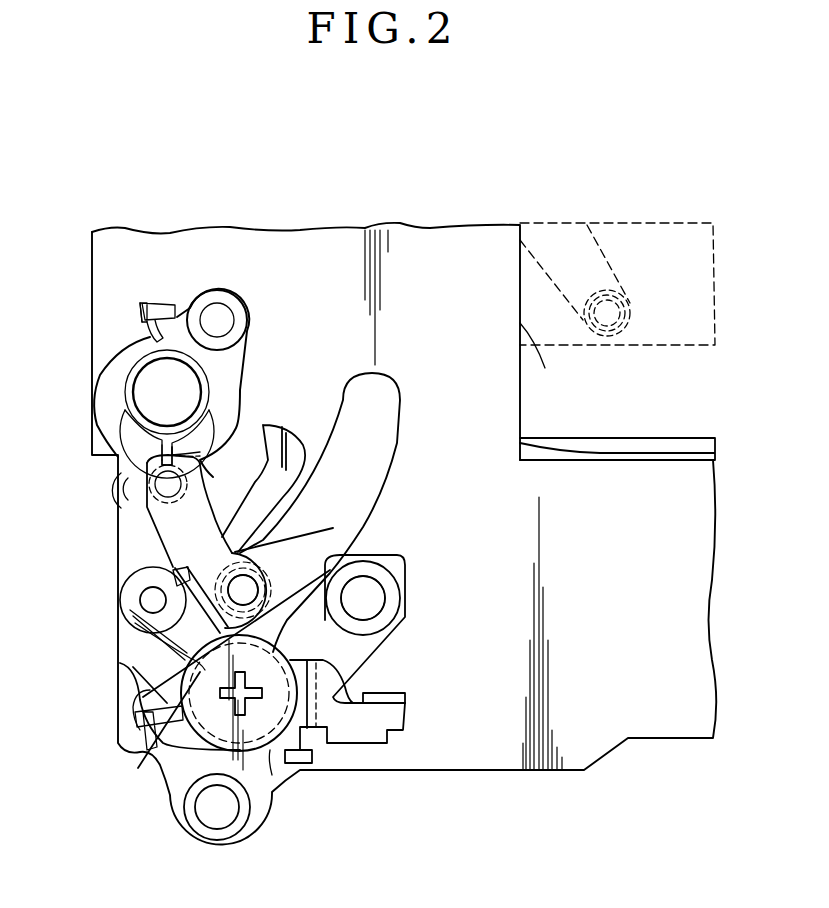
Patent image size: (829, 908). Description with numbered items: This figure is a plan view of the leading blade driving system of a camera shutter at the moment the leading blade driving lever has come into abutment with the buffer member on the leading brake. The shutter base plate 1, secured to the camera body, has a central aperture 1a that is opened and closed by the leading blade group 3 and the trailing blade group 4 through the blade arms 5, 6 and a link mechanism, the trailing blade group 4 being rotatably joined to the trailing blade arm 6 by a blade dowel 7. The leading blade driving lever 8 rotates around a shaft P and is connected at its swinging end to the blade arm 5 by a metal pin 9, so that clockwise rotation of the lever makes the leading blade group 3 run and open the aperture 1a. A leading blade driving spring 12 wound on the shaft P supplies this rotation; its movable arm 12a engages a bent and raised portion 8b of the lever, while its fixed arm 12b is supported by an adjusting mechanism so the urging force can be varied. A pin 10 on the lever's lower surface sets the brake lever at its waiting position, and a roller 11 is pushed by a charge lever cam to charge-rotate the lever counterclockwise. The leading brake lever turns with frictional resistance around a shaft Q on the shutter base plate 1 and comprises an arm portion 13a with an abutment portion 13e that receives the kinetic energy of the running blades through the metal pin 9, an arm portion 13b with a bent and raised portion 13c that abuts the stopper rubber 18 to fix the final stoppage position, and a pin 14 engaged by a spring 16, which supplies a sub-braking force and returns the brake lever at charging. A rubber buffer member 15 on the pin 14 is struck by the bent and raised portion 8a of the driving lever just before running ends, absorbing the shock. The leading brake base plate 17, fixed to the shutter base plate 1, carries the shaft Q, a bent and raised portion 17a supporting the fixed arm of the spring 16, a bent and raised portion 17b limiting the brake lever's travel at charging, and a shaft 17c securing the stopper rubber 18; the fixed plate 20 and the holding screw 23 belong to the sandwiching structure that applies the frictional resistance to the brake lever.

The shutter base plate 1 is at (478, 258).
The aperture 1a is at (541, 359).
The leading blade group 3 is at (692, 450).
The trailing blade group 4 is at (663, 307).
The blade arm 5 is at (300, 567).
The trailing blade arm 6 is at (606, 262).
The blade dowel 7 is at (607, 336).
The leading blade driving lever 8 is at (195, 500).
The bent and raised portion 8a is at (177, 573).
The bent and raised portion 8b is at (167, 300).
The metal pin 9 is at (270, 580).
The pin 10 is at (147, 487).
The roller 11 is at (218, 312).
The leading blade driving spring 12 is at (212, 388).
The movable arm 12a is at (140, 308).
The fixed arm 12b is at (150, 455).
The arm portion 13a is at (285, 452).
The arm portion 13b is at (352, 717).
The bent and raised portion 13c is at (405, 698).
The abutment portion 13e is at (137, 627).
The pin 14 is at (147, 600).
The buffer member 15 is at (140, 587).
The spring 16 is at (137, 670).
The leading brake base plate 17 is at (350, 652).
The bent and raised portion 17a is at (140, 733).
The bent and raised portion 17b is at (302, 760).
The shaft 17c is at (368, 610).
The stopper rubber 18 is at (392, 600).
The fixed plate 20 is at (153, 763).
The holding screw 23 is at (270, 753).
The shaft P is at (147, 387).
The shaft Q is at (250, 687).